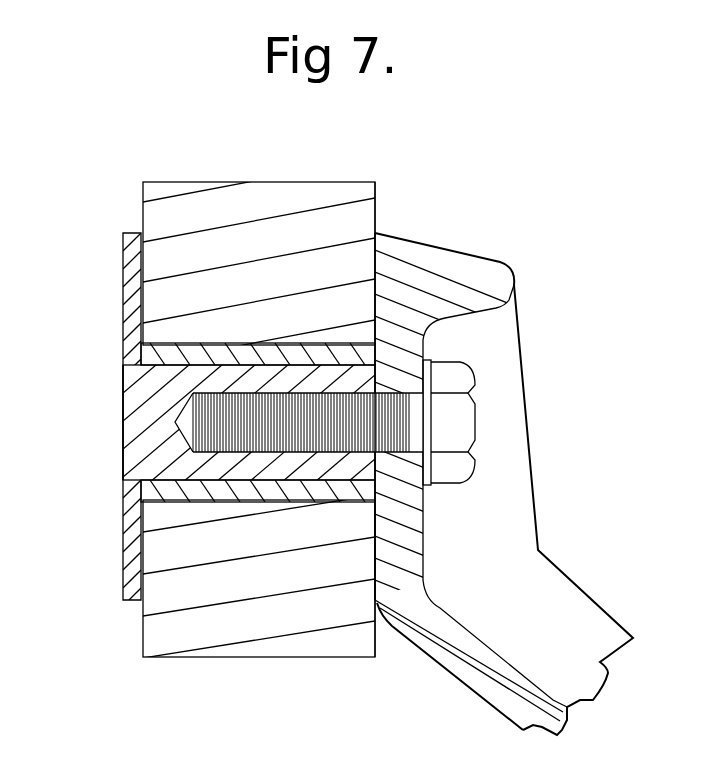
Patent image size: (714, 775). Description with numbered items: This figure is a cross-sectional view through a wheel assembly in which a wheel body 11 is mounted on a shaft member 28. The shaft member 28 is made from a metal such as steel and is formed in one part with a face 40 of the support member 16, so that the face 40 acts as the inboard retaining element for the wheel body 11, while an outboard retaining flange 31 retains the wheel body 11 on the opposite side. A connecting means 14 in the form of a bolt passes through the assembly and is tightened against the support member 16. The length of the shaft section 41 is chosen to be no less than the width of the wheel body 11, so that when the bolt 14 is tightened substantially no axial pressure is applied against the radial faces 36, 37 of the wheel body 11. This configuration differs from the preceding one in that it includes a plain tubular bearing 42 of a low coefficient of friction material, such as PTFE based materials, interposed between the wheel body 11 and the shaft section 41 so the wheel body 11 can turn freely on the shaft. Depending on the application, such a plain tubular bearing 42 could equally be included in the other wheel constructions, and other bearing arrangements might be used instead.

The wheel body 11 is at (278, 210).
The connecting means 14 is at (478, 422).
The support member 16 is at (438, 270).
The shaft member 28 is at (98, 421).
The outboard retaining flange 31 is at (122, 290).
The radial face 36 is at (142, 630).
The radial face 37 is at (378, 207).
The face 40 is at (375, 560).
The shaft section 41 is at (130, 450).
The plain tubular bearing 42 is at (197, 500).